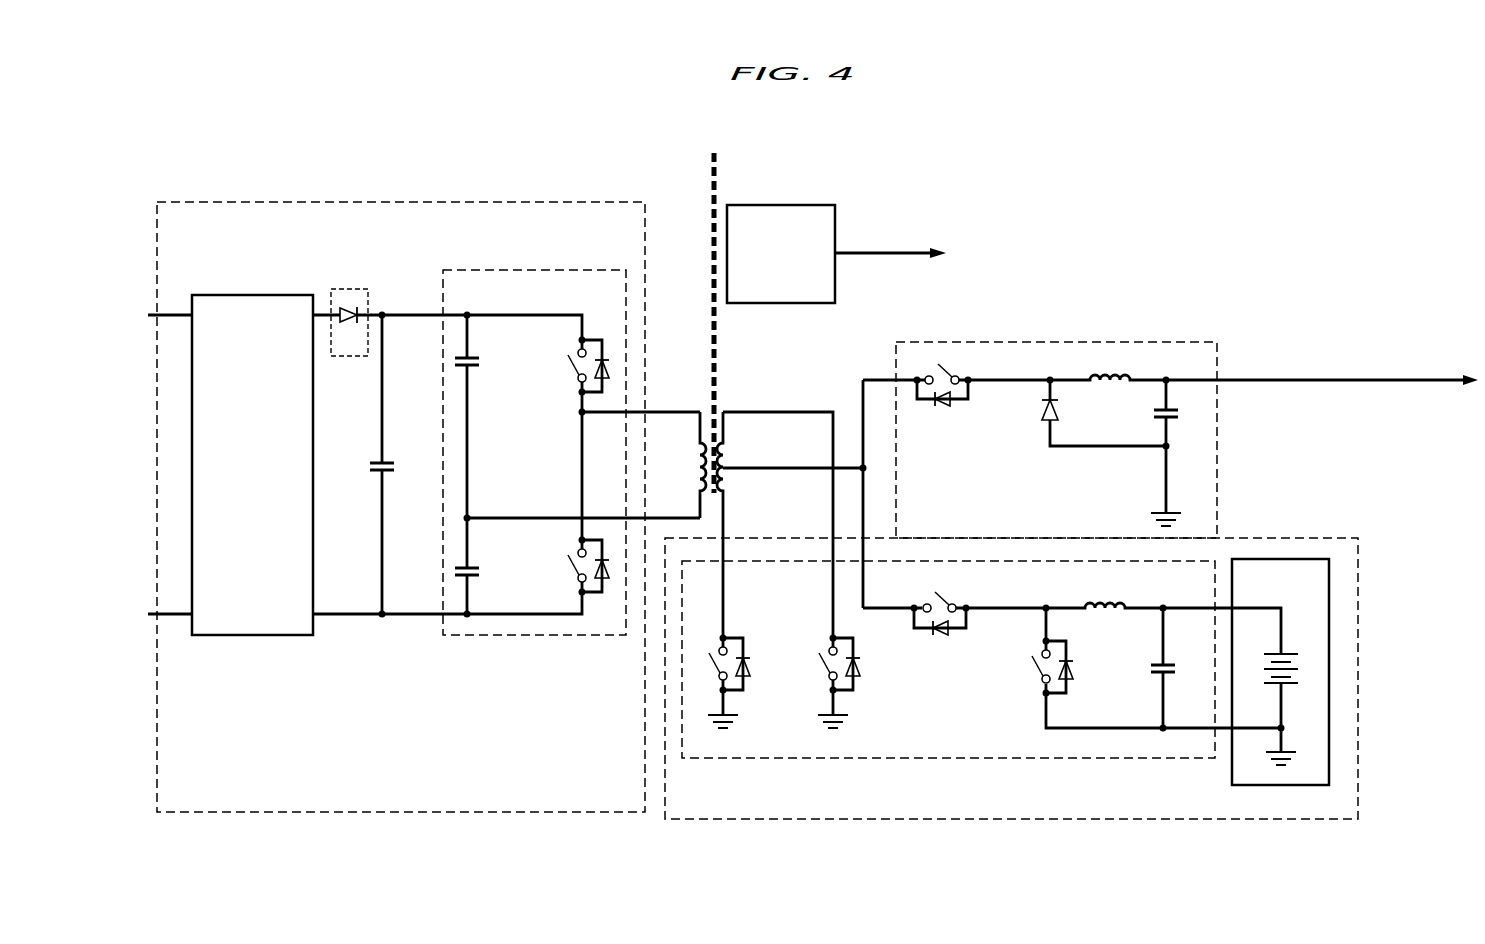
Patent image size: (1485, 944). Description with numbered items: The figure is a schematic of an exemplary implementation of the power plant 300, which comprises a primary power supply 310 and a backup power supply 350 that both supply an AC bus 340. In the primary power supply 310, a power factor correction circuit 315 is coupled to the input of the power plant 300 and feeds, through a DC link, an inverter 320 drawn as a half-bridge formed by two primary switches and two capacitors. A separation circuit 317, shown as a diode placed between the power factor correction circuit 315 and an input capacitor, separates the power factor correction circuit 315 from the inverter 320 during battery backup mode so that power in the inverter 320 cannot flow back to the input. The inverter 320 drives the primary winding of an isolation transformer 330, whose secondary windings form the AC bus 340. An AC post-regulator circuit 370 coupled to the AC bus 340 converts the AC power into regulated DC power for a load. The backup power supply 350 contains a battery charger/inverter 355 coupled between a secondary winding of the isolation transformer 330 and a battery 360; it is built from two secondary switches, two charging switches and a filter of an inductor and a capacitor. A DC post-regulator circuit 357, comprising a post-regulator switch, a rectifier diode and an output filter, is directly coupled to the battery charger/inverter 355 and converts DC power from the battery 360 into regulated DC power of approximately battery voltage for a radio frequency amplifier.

The power plant 300 is at (978, 198).
The primary power supply 310 is at (403, 812).
The power factor correction circuit 315 is at (252, 294).
The separation circuit 317 is at (348, 289).
The inverter 320 is at (535, 270).
The isolation transformer 330 is at (700, 398).
The AC bus 340 is at (729, 190).
The backup power supply 350 is at (1000, 819).
The battery charger/inverter 355 is at (943, 758).
The DC post-regulator circuit 357 is at (1217, 446).
The battery 360 is at (1282, 558).
The AC post-regulator circuit 370 is at (835, 292).